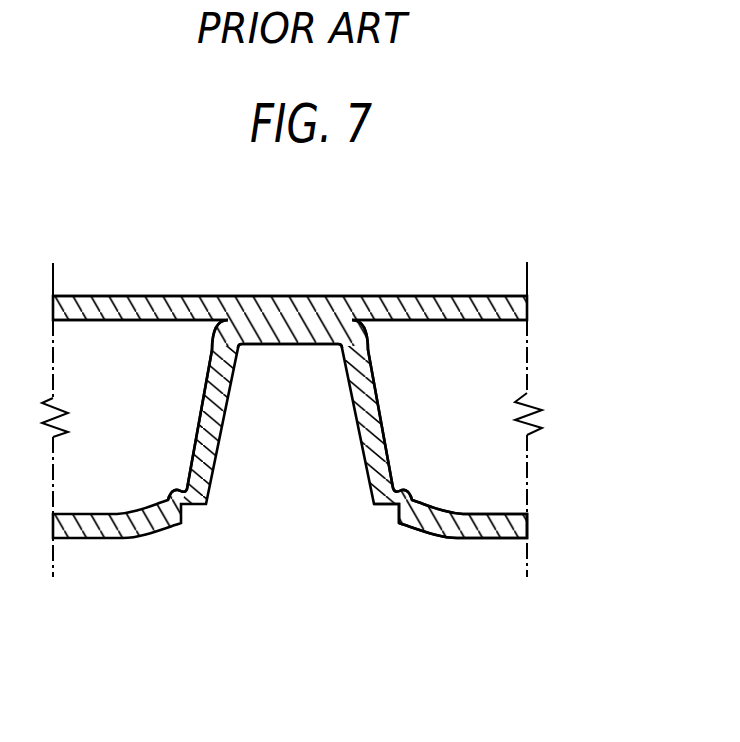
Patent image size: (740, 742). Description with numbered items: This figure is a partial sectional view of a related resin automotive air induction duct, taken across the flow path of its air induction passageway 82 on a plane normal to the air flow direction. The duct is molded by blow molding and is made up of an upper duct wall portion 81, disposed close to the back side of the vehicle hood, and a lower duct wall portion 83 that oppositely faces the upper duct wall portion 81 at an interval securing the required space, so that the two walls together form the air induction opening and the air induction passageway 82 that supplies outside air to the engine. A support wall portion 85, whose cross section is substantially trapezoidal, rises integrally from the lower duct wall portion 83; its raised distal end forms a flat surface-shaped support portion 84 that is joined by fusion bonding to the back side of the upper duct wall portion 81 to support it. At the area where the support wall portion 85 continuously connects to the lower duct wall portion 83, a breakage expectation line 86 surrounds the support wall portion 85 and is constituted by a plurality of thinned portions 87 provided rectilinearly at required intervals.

The upper duct wall portion 81 is at (508, 309).
The air induction passageway 82 is at (124, 362).
The lower duct wall portion 83 is at (470, 528).
The flat surface-shaped support portion 84 is at (289, 331).
The support wall portion 85 is at (392, 358).
The breakage expectation line 86 is at (402, 548).
The thinned portions 87 is at (197, 521).